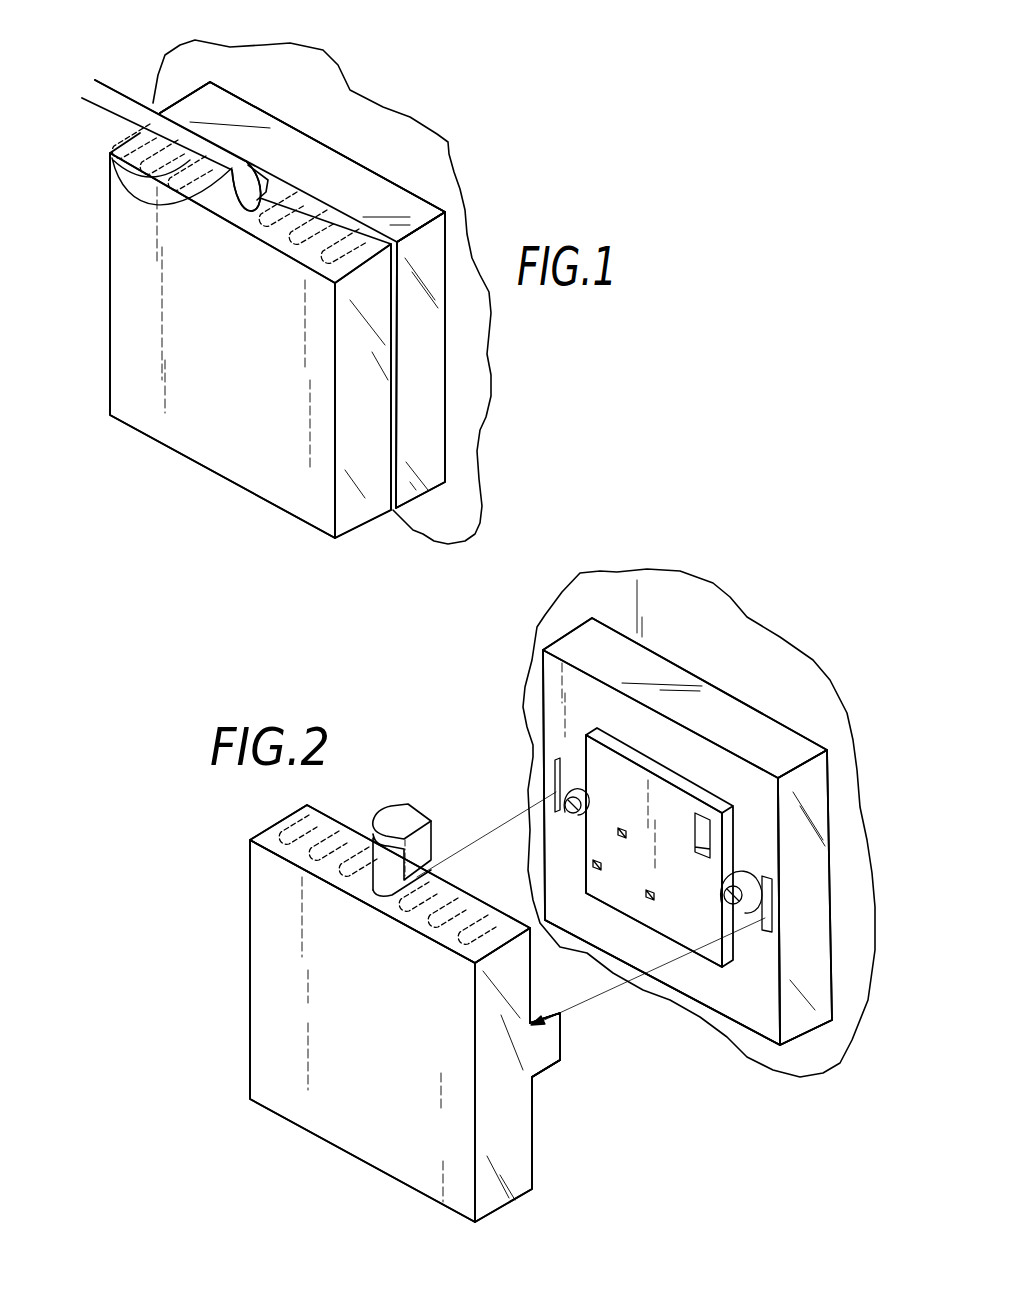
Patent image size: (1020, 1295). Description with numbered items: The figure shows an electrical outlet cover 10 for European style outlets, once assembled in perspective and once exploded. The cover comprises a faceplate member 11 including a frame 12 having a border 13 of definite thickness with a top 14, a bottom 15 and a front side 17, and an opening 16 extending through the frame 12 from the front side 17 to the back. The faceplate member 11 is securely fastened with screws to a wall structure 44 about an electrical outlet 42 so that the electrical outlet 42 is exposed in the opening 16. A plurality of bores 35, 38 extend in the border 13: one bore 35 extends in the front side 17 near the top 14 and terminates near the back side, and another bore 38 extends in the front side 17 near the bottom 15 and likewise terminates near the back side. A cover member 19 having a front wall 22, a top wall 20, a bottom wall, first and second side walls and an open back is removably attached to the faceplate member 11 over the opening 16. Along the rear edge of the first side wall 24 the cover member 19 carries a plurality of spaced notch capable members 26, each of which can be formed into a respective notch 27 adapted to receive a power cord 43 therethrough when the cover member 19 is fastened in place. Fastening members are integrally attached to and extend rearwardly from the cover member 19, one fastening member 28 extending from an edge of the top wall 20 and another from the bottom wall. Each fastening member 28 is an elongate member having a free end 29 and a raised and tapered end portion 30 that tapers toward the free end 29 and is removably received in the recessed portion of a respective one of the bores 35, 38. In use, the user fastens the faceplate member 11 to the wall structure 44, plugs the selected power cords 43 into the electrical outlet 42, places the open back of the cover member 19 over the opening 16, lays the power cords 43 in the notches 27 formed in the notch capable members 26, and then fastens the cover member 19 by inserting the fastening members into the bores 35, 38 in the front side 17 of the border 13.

In FIG. 1, the electrical outlet cover 10 is at (478, 96).
In FIG. 1, the faceplate member 11 is at (422, 362).
In FIG. 2, the faceplate member 11 is at (812, 895).
In FIG. 1, the frame 12 is at (263, 133).
In FIG. 2, the frame 12 is at (657, 677).
In FIG. 1, the border 13 is at (420, 437).
In FIG. 2, the border 13 is at (808, 798).
In FIG. 2, the top 14 is at (600, 697).
In FIG. 2, the bottom 15 is at (733, 1003).
In FIG. 2, the opening 16 is at (700, 897).
In FIG. 2, the front side 17 is at (738, 775).
In FIG. 1, the cover member 19 is at (128, 235).
In FIG. 2, the cover member 19 is at (405, 1013).
In FIG. 1, the top wall 20 is at (350, 505).
In FIG. 2, the top wall 20 is at (516, 1171).
In FIG. 1, the front wall 22 is at (125, 381).
In FIG. 2, the front wall 22 is at (324, 1106).
In FIG. 1, the first side wall 24 is at (360, 270).
In FIG. 2, the first side wall 24 is at (265, 838).
In FIG. 1, the notch capable members 26 is at (112, 156).
In FIG. 2, the notch capable members 26 is at (347, 838).
In FIG. 2, the notch 27 is at (412, 880).
In FIG. 2, the fastening member 28 is at (538, 1043).
In FIG. 2, the free end 29 is at (558, 1008).
In FIG. 2, the raised and tapered end portion 30 is at (560, 1012).
In FIG. 2, the bore 35 is at (558, 757).
In FIG. 2, the bore 38 is at (770, 925).
In FIG. 2, the electrical outlet 42 is at (663, 800).
In FIG. 1, the power cord 43 is at (117, 97).
In FIG. 1, the wall structure 44 is at (403, 137).
In FIG. 2, the wall structure 44 is at (718, 615).